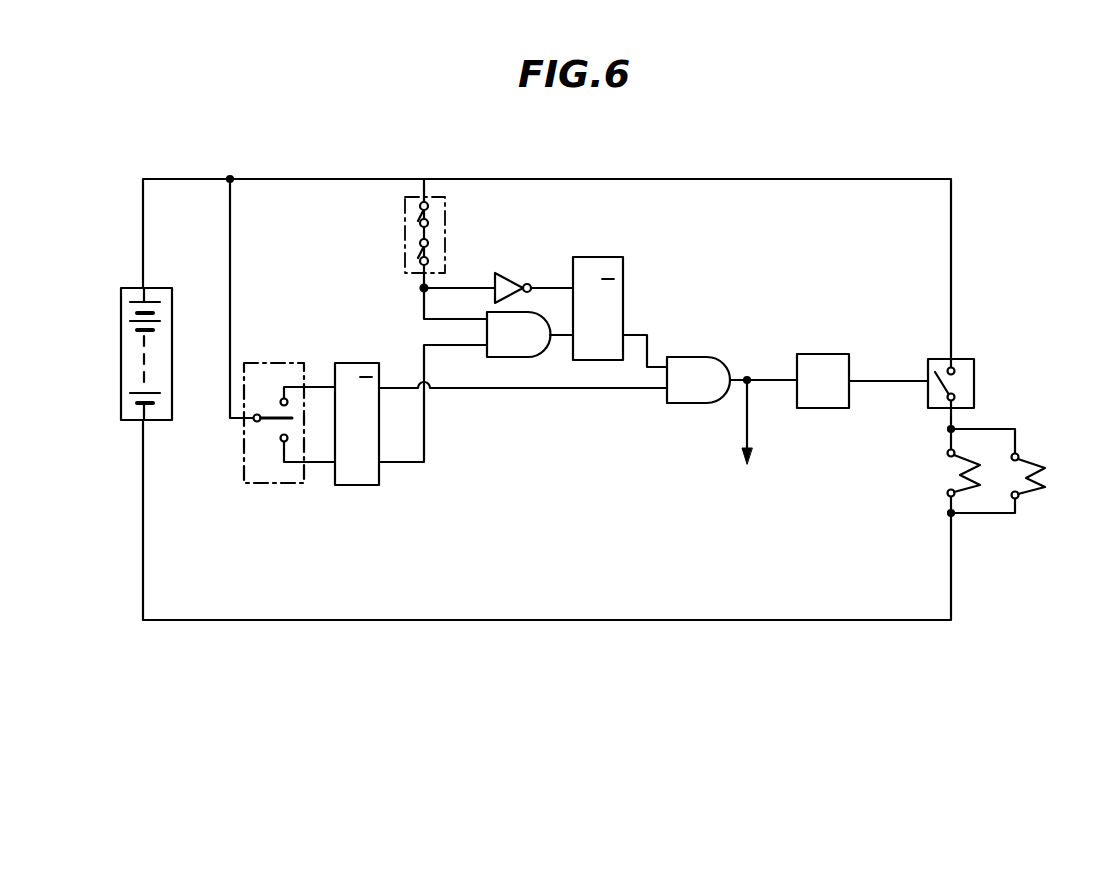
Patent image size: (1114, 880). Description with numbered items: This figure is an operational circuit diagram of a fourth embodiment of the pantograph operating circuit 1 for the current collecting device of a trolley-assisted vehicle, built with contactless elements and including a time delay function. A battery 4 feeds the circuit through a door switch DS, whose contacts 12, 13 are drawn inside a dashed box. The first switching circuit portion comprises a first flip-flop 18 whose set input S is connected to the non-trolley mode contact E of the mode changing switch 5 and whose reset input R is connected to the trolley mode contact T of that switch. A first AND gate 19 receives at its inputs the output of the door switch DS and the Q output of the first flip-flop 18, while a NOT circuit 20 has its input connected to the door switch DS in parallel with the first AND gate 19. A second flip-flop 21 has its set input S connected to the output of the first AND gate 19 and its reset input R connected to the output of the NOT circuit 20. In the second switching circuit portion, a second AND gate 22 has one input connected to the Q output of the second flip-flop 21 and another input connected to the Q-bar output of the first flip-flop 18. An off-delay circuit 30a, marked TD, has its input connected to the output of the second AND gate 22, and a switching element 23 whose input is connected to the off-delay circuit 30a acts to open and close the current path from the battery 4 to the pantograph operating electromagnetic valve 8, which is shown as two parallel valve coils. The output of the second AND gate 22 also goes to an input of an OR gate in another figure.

The control system 1 is at (556, 177).
The battery 4 is at (172, 329).
The mode changing switch 5 is at (270, 484).
The pantograph operating electromagnetic valve 8 is at (1018, 425).
The door switch contact 12 is at (462, 206).
The door switch contact 13 is at (418, 251).
The first flip-flop 18 is at (355, 486).
The first AND gate 19 is at (530, 357).
The NOT circuit 20 is at (510, 273).
The second flip-flop 21 is at (623, 260).
The second AND gate 22 is at (686, 362).
The switching element 23 is at (970, 360).
The off-delay circuit 30a is at (830, 408).